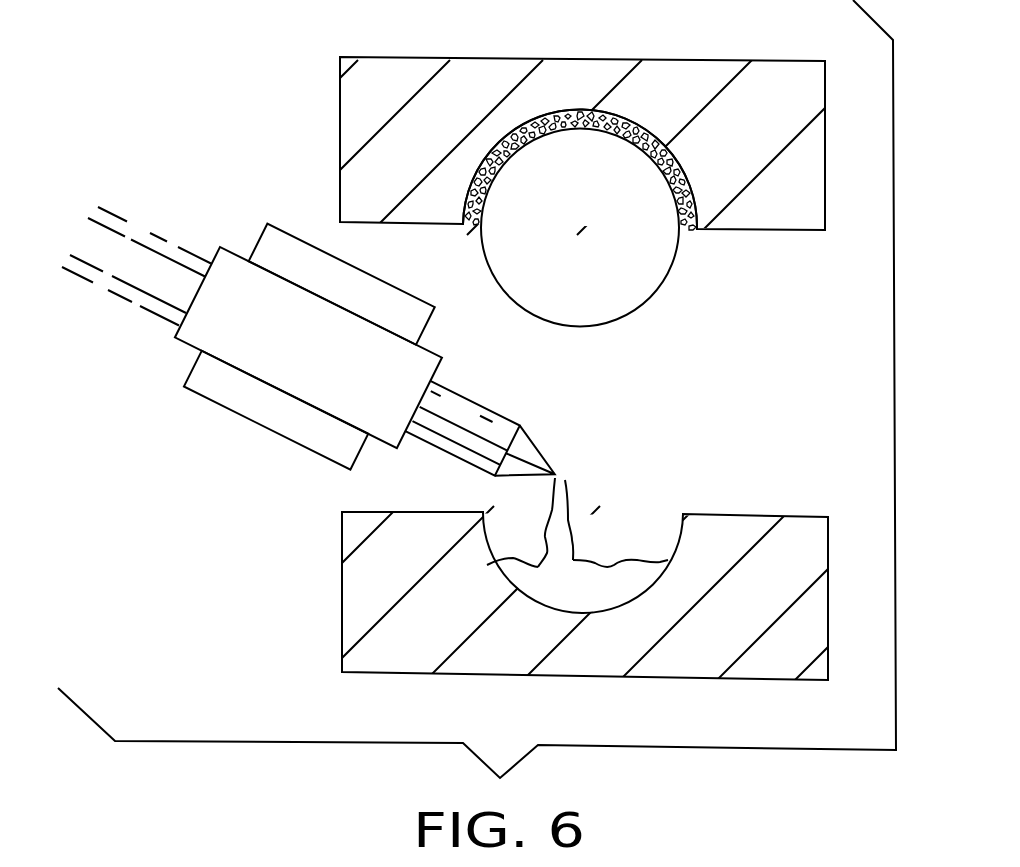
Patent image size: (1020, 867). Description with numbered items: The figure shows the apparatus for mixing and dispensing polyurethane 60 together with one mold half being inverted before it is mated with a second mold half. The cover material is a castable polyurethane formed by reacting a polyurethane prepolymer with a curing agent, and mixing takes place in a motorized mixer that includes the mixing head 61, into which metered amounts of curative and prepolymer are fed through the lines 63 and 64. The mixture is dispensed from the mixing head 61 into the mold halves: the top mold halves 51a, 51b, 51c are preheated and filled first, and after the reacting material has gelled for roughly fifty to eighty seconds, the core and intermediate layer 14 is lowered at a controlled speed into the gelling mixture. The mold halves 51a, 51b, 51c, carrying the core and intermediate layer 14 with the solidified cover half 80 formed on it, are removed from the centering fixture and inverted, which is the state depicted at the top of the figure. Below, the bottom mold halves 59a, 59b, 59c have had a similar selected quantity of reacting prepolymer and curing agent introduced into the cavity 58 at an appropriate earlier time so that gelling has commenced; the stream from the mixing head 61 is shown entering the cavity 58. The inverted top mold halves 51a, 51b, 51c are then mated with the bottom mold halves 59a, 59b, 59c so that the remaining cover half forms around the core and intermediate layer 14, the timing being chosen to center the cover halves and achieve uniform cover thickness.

The core and intermediate layer 14 is at (599, 229).
The top mold half 51a is at (528, 129).
The top mold half 51b is at (528, 129).
The top mold half 51c is at (500, 34).
The cavity 58 is at (673, 533).
The bottom mold half 59a is at (552, 593).
The bottom mold half 59b is at (552, 593).
The bottom mold half 59c is at (365, 592).
The apparatus for mixing and dispensing polyurethane 60 is at (243, 243).
The mixing head 61 is at (334, 368).
The line 63 is at (117, 285).
The line 64 is at (144, 234).
The solidified cover half 80 is at (622, 147).